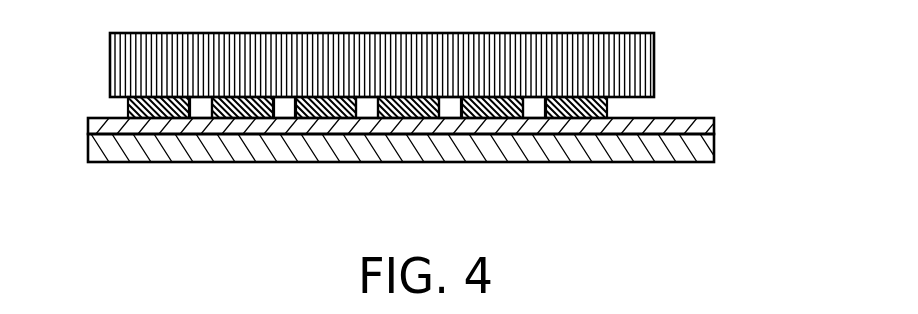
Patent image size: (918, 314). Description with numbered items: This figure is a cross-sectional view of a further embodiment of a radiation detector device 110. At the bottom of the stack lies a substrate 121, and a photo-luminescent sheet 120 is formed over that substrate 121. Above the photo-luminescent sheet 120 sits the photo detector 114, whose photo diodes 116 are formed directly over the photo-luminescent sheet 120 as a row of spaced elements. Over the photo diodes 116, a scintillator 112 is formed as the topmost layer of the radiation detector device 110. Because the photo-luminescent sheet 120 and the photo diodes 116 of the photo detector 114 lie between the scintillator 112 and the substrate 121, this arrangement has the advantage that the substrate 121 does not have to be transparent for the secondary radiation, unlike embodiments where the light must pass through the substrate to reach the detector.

The radiation detector device 110 is at (431, 118).
The scintillator 112 is at (646, 63).
The photo detector 114 is at (323, 147).
The photo diodes 116 is at (162, 113).
The photo-luminescent sheet 120 is at (706, 128).
The substrate 121 is at (706, 148).